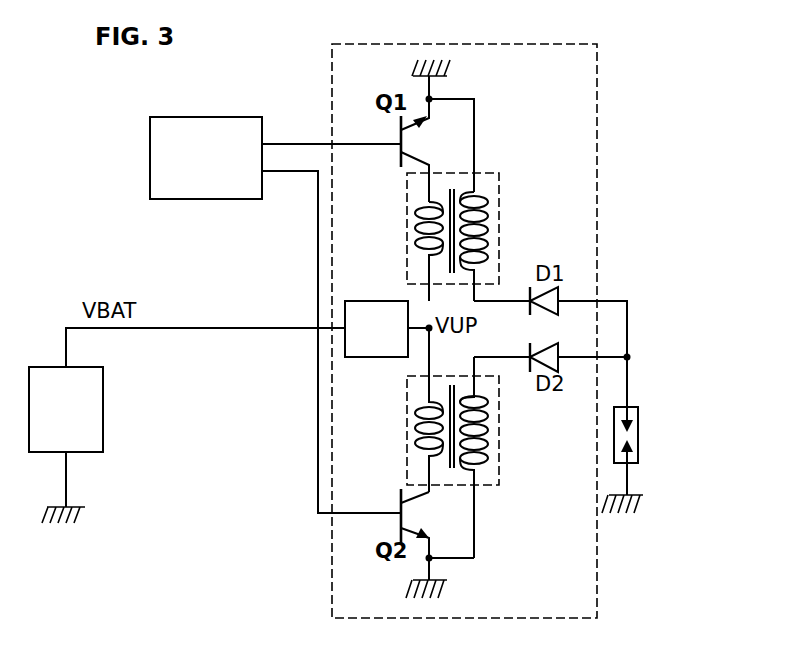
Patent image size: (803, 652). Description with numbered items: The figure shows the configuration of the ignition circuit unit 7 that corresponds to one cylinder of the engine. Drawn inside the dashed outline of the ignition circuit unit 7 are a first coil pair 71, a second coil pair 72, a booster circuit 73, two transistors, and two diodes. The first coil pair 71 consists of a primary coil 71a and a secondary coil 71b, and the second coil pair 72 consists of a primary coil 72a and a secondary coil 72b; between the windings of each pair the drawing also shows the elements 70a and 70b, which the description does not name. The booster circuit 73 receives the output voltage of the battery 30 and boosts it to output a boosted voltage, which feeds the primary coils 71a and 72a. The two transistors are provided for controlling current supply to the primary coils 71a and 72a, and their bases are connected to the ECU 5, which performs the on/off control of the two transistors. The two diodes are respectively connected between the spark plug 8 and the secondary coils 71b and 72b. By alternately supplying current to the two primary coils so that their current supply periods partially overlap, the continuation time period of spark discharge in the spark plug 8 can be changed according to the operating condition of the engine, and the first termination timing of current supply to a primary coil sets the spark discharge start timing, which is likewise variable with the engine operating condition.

The ECU 5 is at (168, 117).
The ignition circuit unit 7 is at (598, 140).
The spark plug 8 is at (638, 433).
The battery 30 is at (103, 405).
The core of first transformer 70a is at (450, 189).
The core of second transformer 70b is at (450, 468).
The first coil pair 71 is at (499, 172).
The primary coil 71a is at (407, 224).
The secondary coil 71b is at (489, 228).
The second coil pair 72 is at (485, 487).
The primary coil 72a is at (407, 426).
The secondary coil 72b is at (489, 430).
The booster circuit 73 is at (345, 318).